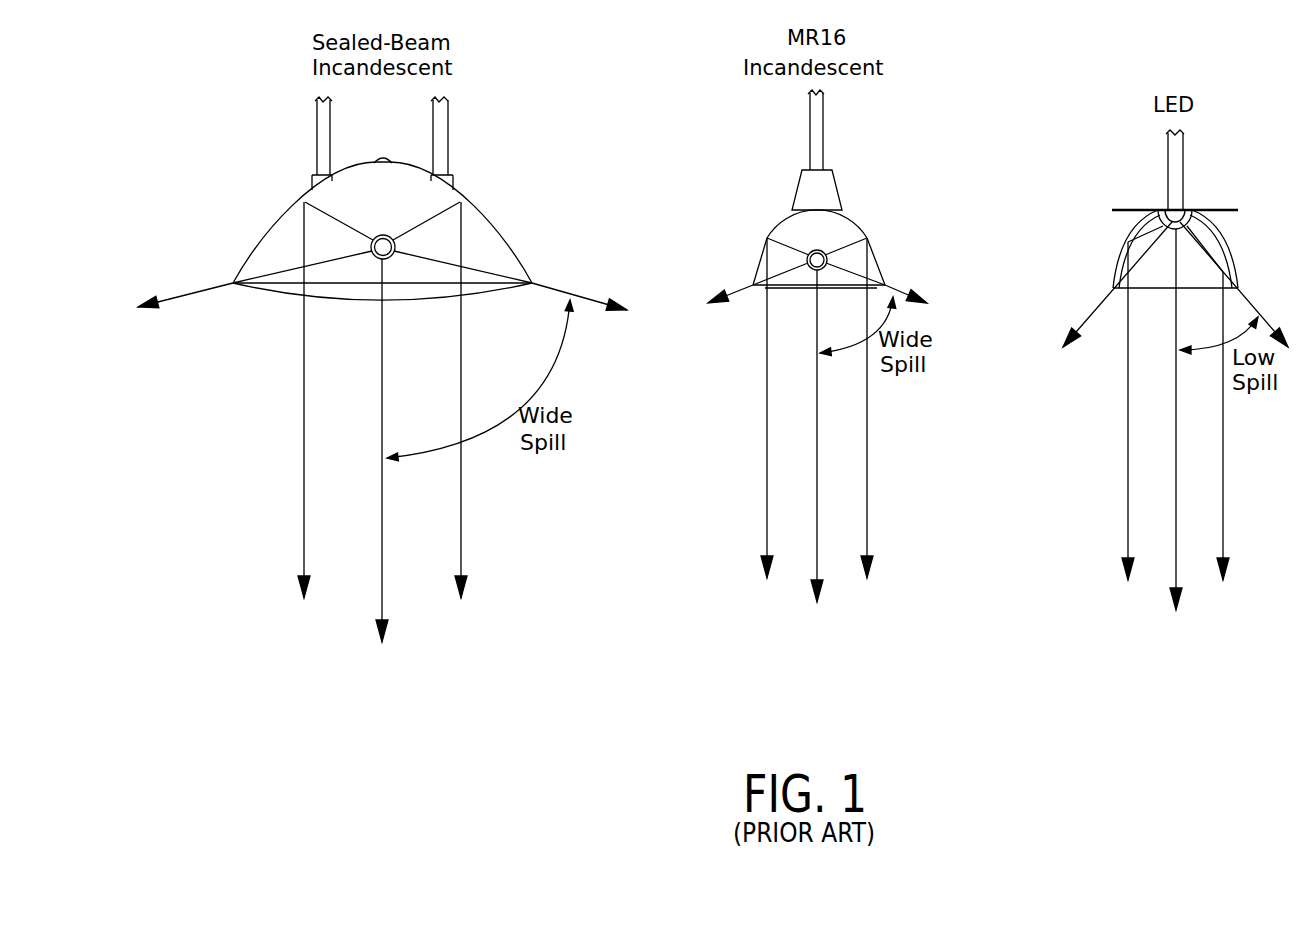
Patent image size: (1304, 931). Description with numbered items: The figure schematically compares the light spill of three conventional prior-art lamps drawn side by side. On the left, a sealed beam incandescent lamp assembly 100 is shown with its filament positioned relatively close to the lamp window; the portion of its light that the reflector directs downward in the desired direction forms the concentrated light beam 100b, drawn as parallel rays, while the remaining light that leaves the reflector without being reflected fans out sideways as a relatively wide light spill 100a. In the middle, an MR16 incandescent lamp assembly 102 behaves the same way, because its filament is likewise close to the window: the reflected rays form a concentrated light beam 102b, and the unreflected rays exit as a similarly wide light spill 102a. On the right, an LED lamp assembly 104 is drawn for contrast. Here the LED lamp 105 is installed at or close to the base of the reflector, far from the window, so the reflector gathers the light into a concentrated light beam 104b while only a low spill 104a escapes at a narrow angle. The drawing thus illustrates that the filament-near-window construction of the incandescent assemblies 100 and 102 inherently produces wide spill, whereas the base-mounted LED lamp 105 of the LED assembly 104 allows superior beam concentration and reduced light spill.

The sealed beam incandescent lamp assembly 100 is at (287, 208).
The light spill 100a is at (546, 287).
The concentrated light beam 100b is at (304, 450).
The MR16 incandescent lamp assembly 102 is at (777, 228).
The light spill 102a is at (885, 282).
The concentrated light beam 102b is at (768, 452).
The LED lamp assembly 104 is at (1123, 248).
The low spill 104a is at (1088, 313).
The concentrated light beam 104b is at (1128, 472).
The LED lamp 105 is at (1182, 218).